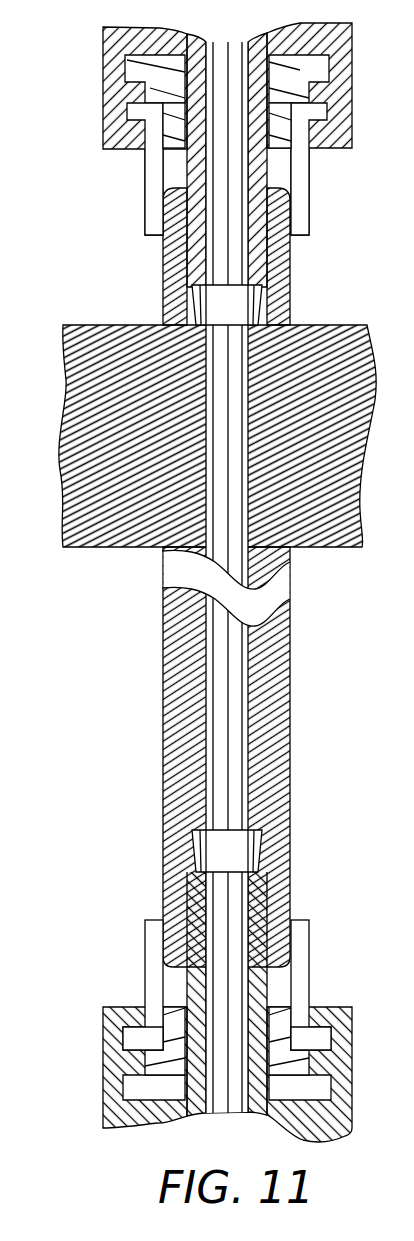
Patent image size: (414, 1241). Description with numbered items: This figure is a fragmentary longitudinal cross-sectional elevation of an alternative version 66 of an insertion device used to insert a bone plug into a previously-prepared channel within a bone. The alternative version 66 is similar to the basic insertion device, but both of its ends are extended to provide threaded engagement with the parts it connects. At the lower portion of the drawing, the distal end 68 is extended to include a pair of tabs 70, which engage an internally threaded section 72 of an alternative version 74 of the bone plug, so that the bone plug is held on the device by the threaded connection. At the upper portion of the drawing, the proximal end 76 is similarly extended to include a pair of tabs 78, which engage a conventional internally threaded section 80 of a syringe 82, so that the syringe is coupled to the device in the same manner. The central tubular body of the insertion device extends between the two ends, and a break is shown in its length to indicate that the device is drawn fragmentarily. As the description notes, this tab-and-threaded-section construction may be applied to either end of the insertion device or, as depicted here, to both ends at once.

The alternative version of insertion device 66 is at (138, 852).
The distal end 68 is at (178, 966).
The tabs 70 is at (308, 985).
The internally threaded section 72 is at (103, 1042).
The alternative version of bone plug 74 is at (208, 1015).
The proximal end 76 is at (177, 192).
The tabs 78 is at (308, 168).
The internally threaded section 80 is at (103, 88).
The syringe 82 is at (199, 129).